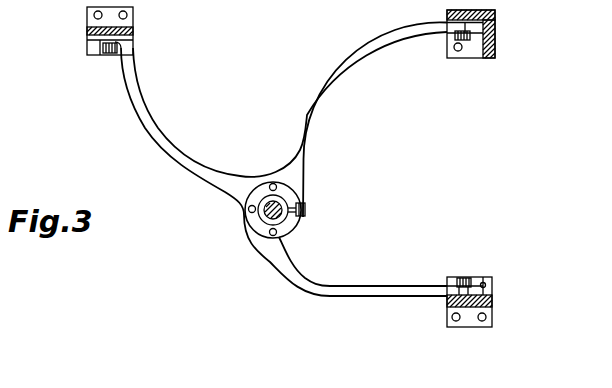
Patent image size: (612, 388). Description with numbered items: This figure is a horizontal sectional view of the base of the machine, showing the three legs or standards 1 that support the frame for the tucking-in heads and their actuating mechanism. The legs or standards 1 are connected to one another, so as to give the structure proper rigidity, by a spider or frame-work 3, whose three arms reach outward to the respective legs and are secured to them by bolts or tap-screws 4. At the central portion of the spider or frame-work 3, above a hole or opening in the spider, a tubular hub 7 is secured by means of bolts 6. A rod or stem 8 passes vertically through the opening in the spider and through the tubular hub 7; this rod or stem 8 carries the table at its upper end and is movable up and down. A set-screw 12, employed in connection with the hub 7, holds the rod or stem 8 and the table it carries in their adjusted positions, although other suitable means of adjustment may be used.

The legs or standards 1 is at (87, 29).
The spider or frame-work 3 is at (297, 163).
The bolts or tap-screws 4 is at (110, 54).
The bolts 6 is at (277, 187).
The tubular hub 7 is at (288, 233).
The rod or stem 8 is at (271, 200).
The set-screw 12 is at (307, 208).